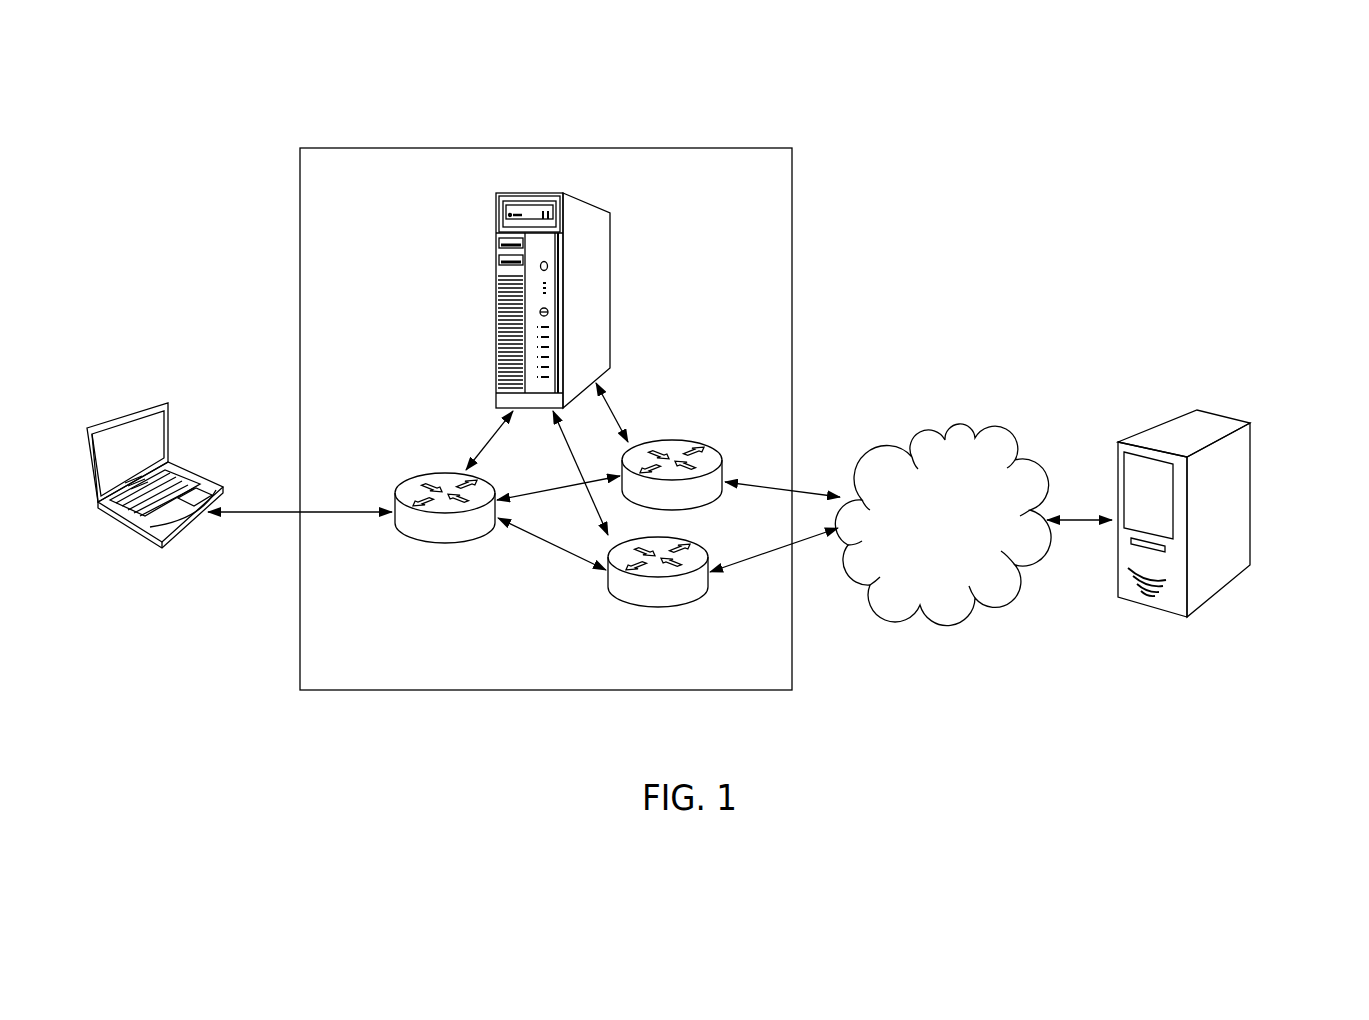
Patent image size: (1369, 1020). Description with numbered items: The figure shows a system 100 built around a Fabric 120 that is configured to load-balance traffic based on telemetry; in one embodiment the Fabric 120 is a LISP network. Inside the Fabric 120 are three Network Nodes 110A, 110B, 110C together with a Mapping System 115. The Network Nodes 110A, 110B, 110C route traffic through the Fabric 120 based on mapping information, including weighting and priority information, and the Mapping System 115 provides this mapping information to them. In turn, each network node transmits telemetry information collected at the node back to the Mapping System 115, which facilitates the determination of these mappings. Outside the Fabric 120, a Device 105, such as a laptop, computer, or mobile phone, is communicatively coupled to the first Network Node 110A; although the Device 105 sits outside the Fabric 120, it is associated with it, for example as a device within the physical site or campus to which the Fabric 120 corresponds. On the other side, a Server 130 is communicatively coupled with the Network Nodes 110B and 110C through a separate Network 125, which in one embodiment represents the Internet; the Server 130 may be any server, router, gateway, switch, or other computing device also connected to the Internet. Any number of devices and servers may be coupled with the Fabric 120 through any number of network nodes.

The system 100 is at (178, 103).
The device 105 is at (168, 406).
The first network node 110A is at (440, 544).
The network node 110B is at (690, 438).
The network node 110C is at (655, 608).
The mapping system 115 is at (610, 292).
The fabric 120 is at (792, 242).
The network 125 is at (975, 437).
The server 130 is at (1252, 505).